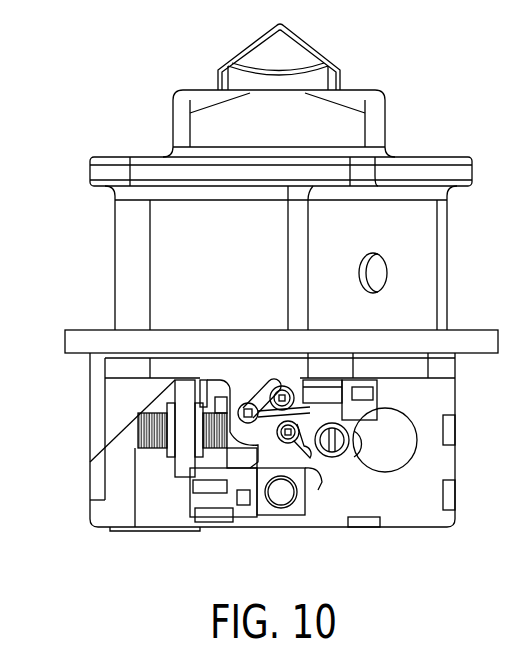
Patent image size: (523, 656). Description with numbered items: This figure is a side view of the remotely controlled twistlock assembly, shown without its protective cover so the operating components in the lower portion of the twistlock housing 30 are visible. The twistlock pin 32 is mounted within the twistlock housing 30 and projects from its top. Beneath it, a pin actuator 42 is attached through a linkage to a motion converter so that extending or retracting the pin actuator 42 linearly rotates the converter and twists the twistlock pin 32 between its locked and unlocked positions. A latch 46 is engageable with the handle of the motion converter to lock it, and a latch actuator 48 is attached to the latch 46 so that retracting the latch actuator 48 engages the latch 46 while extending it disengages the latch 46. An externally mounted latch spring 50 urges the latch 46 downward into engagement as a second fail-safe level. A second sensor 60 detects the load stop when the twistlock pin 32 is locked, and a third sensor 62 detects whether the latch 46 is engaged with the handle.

The twistlock housing 30 is at (112, 157).
The twistlock pin 32 is at (252, 44).
The pin actuator 42 is at (205, 490).
The latch 46 is at (313, 482).
The latch actuator 48 is at (138, 448).
The latch spring 50 is at (314, 408).
The second sensor 60 is at (375, 385).
The third sensor 62 is at (205, 386).